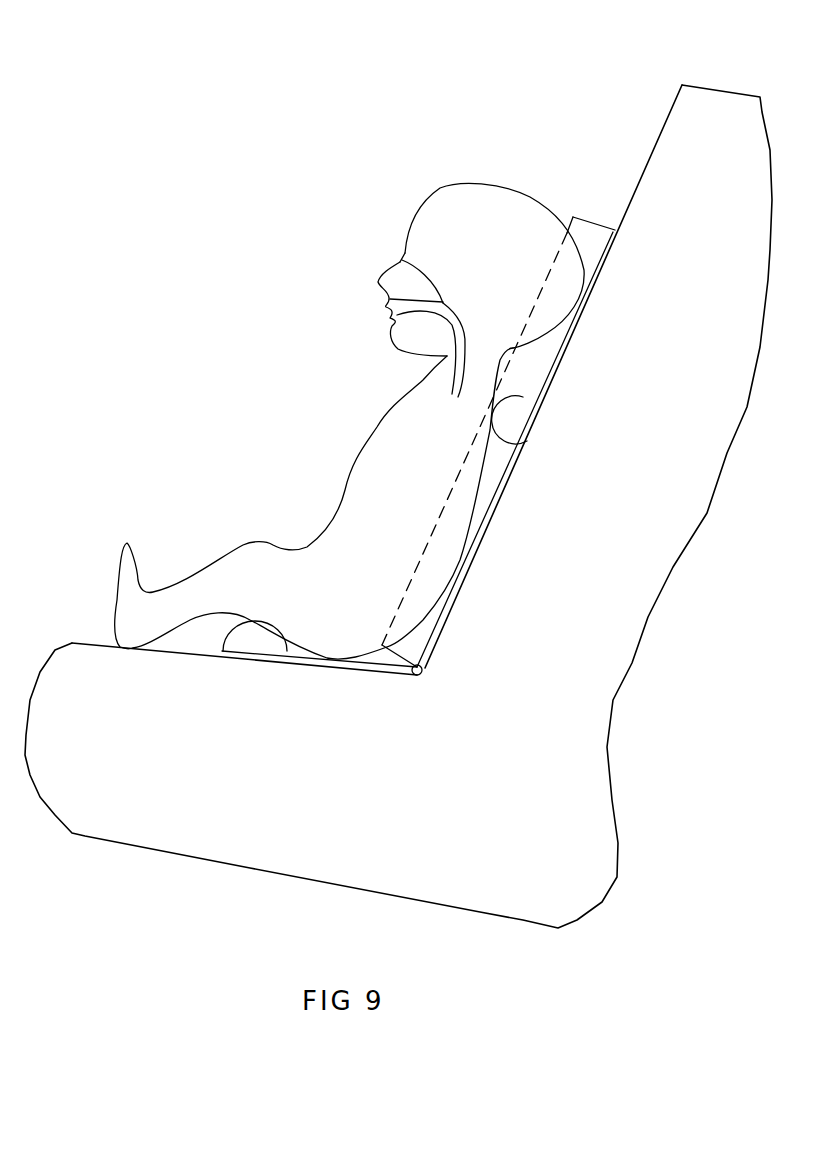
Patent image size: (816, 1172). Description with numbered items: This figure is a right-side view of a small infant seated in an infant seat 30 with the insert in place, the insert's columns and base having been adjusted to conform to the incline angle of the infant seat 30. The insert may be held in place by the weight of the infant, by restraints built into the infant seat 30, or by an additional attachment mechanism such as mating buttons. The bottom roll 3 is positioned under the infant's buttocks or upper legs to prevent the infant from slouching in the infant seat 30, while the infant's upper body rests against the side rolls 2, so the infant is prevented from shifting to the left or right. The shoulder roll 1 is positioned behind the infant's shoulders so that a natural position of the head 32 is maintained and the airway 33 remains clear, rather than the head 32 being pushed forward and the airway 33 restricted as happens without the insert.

The shoulder roll 1 is at (513, 420).
The side rolls 2 is at (593, 227).
The bottom roll 3 is at (258, 642).
The infant seat 30 is at (667, 117).
The head 32 is at (481, 185).
The airway 33 is at (400, 261).